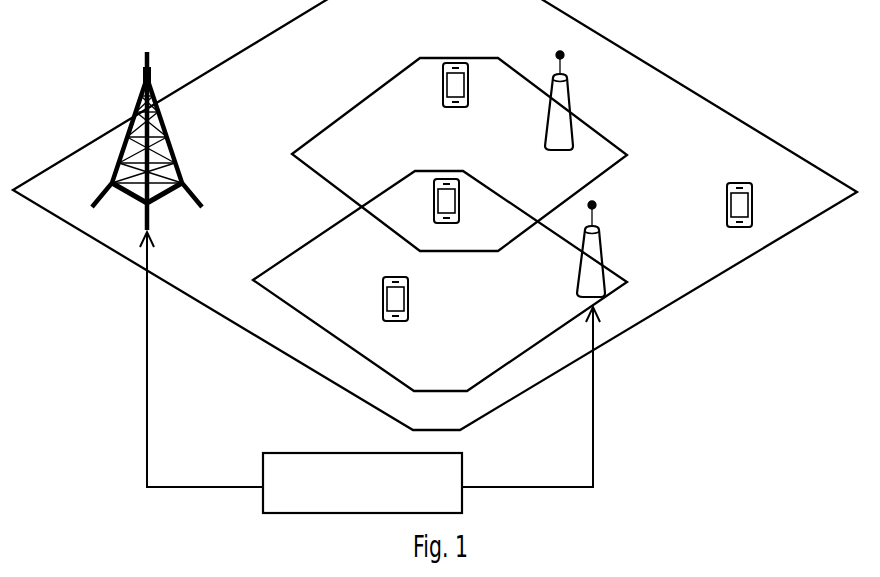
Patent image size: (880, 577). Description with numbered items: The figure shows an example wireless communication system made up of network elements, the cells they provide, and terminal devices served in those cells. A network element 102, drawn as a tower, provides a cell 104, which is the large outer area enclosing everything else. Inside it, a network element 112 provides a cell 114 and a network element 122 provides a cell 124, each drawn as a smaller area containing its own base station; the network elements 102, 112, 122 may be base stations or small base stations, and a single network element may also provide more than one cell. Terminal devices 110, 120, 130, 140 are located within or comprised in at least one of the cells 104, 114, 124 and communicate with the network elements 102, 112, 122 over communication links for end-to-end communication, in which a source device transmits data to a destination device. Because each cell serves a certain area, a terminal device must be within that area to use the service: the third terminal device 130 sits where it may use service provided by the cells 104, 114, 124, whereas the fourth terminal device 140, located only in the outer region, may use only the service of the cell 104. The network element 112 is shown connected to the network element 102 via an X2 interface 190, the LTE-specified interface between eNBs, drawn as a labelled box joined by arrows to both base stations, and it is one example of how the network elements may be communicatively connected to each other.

The network element 102 is at (143, 79).
The cell 104 is at (65, 210).
The terminal device 110 is at (396, 321).
The network element 112 is at (601, 232).
The cell 114 is at (300, 267).
The terminal device 120 is at (458, 107).
The network element 122 is at (567, 86).
The cell 124 is at (364, 118).
The third terminal device 130 is at (447, 223).
The fourth terminal device 140 is at (739, 228).
The X2 interface 190 is at (312, 500).